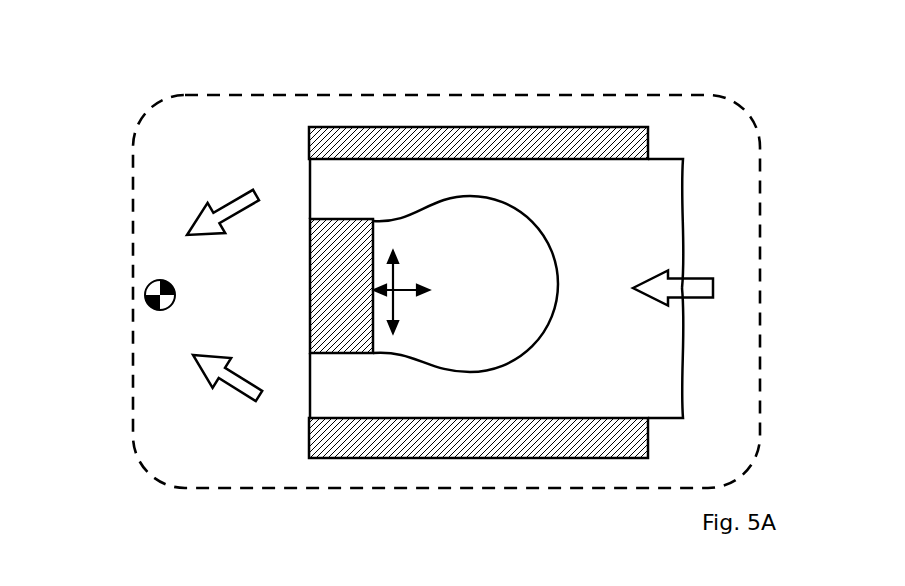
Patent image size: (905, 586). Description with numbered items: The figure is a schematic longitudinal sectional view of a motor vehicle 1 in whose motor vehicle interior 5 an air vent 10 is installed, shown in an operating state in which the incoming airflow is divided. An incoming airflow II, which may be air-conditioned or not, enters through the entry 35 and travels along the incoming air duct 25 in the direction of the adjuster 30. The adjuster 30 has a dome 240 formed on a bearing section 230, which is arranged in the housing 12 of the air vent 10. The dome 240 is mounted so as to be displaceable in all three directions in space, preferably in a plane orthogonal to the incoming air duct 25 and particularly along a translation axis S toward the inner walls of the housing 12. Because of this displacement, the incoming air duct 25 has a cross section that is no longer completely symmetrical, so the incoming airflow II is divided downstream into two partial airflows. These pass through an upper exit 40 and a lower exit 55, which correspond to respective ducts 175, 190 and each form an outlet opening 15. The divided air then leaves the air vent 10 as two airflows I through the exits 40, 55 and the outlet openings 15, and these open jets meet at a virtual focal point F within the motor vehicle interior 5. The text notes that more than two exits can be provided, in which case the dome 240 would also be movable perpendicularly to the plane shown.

The motor vehicle 1 is at (747, 467).
The motor vehicle interior 5 is at (186, 459).
The air vent 10 is at (552, 135).
The housing 12 is at (612, 137).
The outlet opening 15 is at (270, 289).
The upper exit 40 is at (307, 177).
The lower exit 55 is at (310, 393).
The duct 175 is at (335, 193).
The duct 190 is at (360, 383).
The bearing section 230 is at (330, 313).
The adjuster 30 is at (477, 257).
The dome 240 is at (480, 340).
The incoming air duct 25 is at (649, 203).
The entry 35 is at (640, 348).
The translation axis S is at (398, 282).
The focal point F is at (152, 287).
The airflows I is at (207, 220).
The incoming airflow II is at (707, 285).